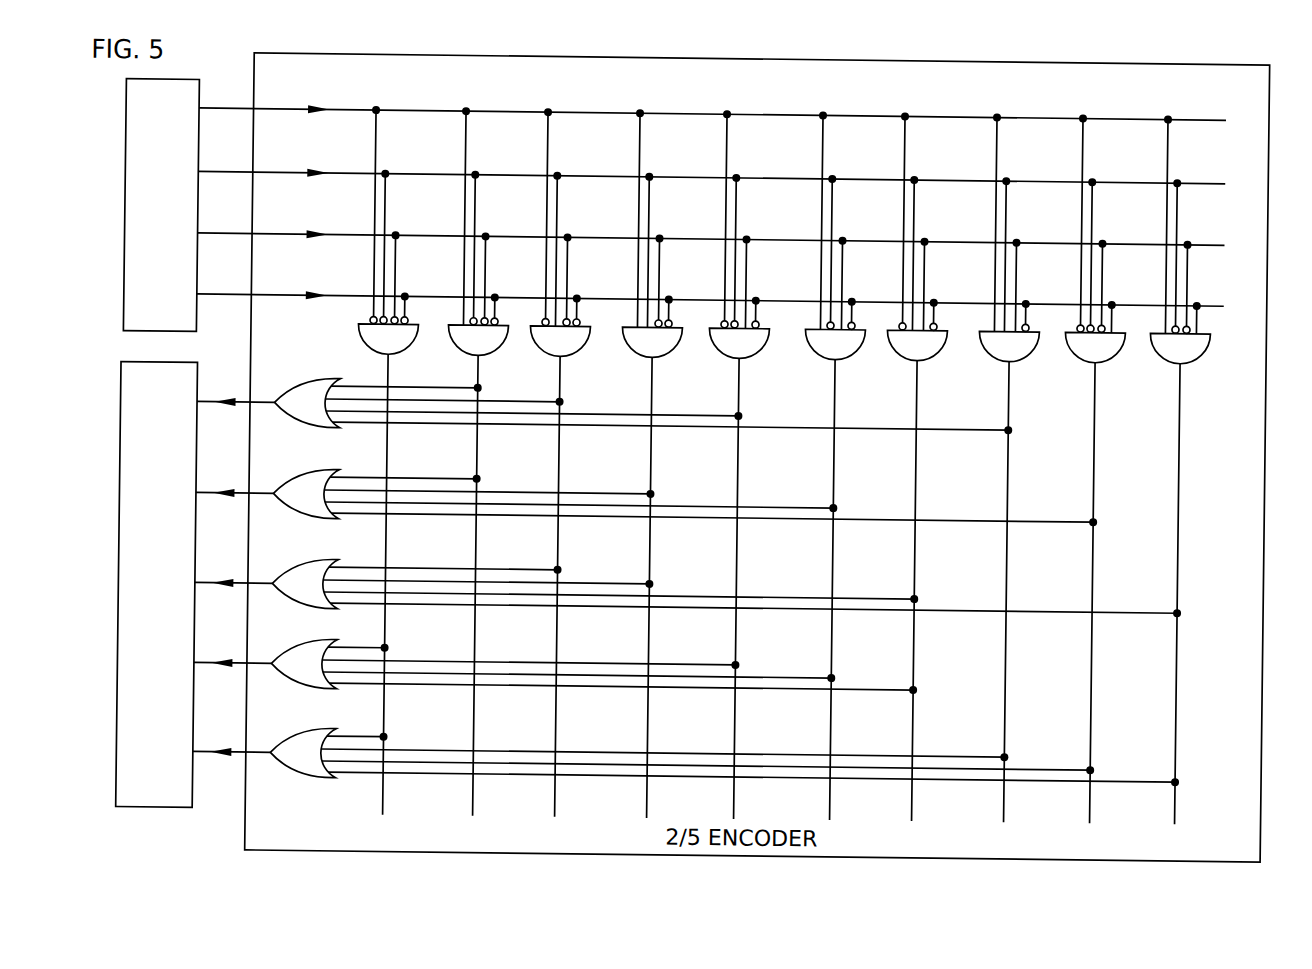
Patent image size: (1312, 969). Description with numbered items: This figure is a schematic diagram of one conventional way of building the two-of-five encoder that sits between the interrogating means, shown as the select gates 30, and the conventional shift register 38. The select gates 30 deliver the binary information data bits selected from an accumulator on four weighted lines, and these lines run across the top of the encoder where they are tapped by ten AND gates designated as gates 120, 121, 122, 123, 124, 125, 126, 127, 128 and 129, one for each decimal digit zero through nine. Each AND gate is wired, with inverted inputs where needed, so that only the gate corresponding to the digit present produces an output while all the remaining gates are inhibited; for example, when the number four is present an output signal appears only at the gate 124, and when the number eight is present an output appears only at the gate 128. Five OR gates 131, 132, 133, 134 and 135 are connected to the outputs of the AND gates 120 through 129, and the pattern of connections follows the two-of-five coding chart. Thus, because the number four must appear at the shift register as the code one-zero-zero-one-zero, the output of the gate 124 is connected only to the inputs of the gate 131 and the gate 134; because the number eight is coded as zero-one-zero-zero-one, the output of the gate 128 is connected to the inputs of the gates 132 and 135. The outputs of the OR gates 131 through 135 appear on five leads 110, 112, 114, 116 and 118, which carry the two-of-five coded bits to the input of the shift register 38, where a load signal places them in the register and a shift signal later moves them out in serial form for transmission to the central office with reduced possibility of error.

The select gates 30 is at (122, 217).
The shift register 38 is at (120, 543).
The lead 110 is at (203, 410).
The lead 112 is at (203, 502).
The lead 114 is at (203, 592).
The lead 116 is at (203, 672).
The lead 118 is at (203, 760).
The AND gate 120 is at (371, 353).
The AND gate 121 is at (461, 354).
The AND gate 122 is at (543, 353).
The AND gate 123 is at (636, 354).
The AND gate 124 is at (723, 354).
The AND gate 125 is at (819, 354).
The AND gate 126 is at (901, 354).
The AND gate 127 is at (993, 354).
The AND gate 128 is at (1079, 354).
The AND gate 129 is at (1164, 354).
The OR gate 131 is at (305, 428).
The OR gate 132 is at (305, 518).
The OR gate 133 is at (305, 608).
The OR gate 134 is at (305, 688).
The OR gate 135 is at (305, 778).